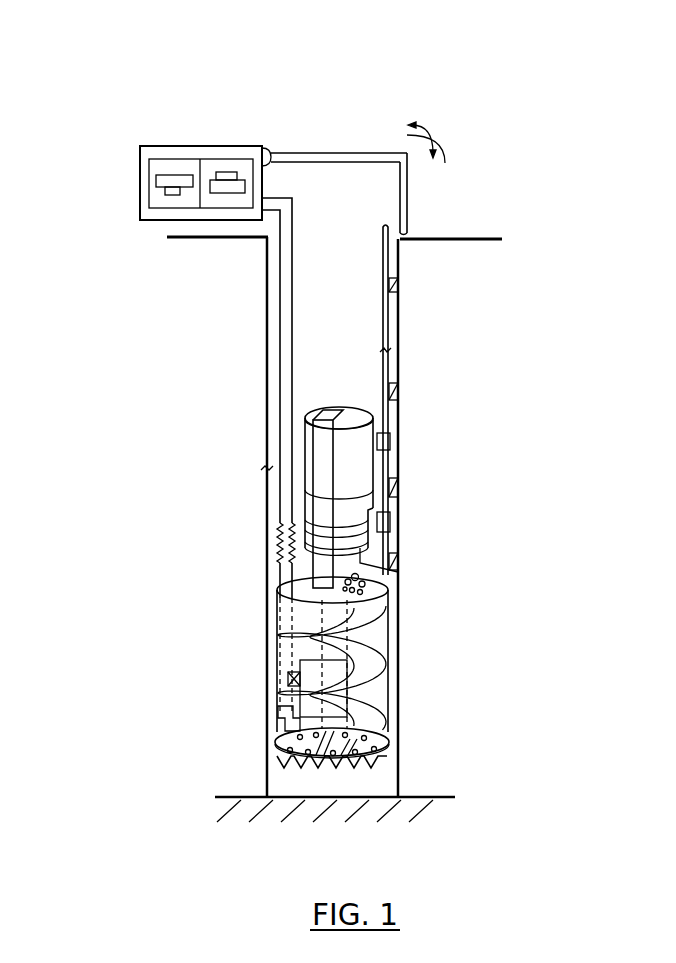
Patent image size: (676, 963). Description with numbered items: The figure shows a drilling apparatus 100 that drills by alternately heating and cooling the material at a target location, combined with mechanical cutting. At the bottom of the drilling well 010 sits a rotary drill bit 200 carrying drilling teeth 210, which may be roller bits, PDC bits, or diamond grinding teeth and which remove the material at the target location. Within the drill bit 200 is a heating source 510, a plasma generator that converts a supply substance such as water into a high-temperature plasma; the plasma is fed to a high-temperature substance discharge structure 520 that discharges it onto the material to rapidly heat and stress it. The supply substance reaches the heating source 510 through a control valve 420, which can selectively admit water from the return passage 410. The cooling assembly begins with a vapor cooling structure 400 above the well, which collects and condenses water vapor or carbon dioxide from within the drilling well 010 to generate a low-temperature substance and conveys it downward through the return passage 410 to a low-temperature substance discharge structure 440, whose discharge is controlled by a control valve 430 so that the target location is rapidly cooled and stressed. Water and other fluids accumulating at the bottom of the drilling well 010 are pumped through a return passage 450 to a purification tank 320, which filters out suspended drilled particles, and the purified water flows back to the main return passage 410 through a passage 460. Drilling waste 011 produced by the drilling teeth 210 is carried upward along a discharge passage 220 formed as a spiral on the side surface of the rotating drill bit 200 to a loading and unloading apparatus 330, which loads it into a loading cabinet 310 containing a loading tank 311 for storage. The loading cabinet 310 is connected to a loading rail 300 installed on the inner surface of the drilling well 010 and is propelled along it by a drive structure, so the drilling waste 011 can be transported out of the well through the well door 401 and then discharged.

The drilling apparatus 100 is at (443, 195).
The drilling well 010 is at (340, 268).
The drilling waste 011 is at (298, 597).
The drill bit 200 is at (385, 627).
The drilling teeth 210 is at (373, 767).
The discharge passage 220 is at (337, 633).
The loading rail 300 is at (393, 311).
The loading cabinet 310 is at (360, 472).
The loading tank 311 is at (358, 418).
The purification tank 320 is at (352, 540).
The loading and unloading apparatus 330 is at (328, 442).
The vapor cooling structure 400 is at (210, 147).
The well door 401 is at (371, 152).
The return passage 410 is at (284, 392).
The control valve 420 is at (297, 678).
The control valve 430 is at (277, 710).
The low-temperature substance discharge structure 440 is at (277, 740).
The return passage 450 is at (402, 575).
The passage 460 is at (300, 563).
The heating source 510 is at (353, 692).
The high-temperature substance discharge structure 520 is at (278, 750).